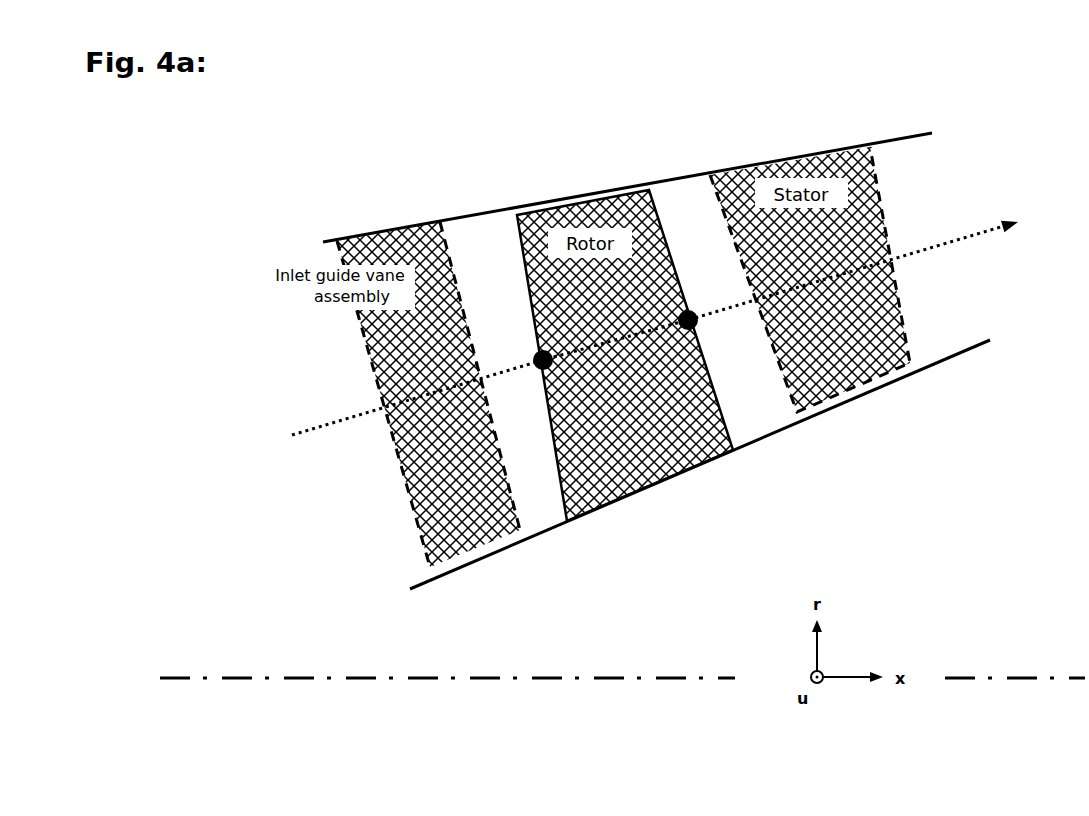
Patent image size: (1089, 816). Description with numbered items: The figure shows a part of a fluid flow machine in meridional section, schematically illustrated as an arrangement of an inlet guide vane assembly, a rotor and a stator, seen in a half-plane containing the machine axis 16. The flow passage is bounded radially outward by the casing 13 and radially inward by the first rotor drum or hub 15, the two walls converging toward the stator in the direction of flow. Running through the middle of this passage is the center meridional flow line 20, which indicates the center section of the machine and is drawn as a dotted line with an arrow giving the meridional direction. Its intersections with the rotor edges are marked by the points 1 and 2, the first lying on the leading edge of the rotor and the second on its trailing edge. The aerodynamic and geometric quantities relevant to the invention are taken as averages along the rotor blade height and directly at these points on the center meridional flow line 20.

The point 1 is at (543, 360).
The point 2 is at (688, 320).
The casing 13 is at (353, 236).
The first rotor drum (hub) 15 is at (557, 533).
The machine axis 16 is at (405, 682).
The center meridional flow line 20 is at (302, 428).